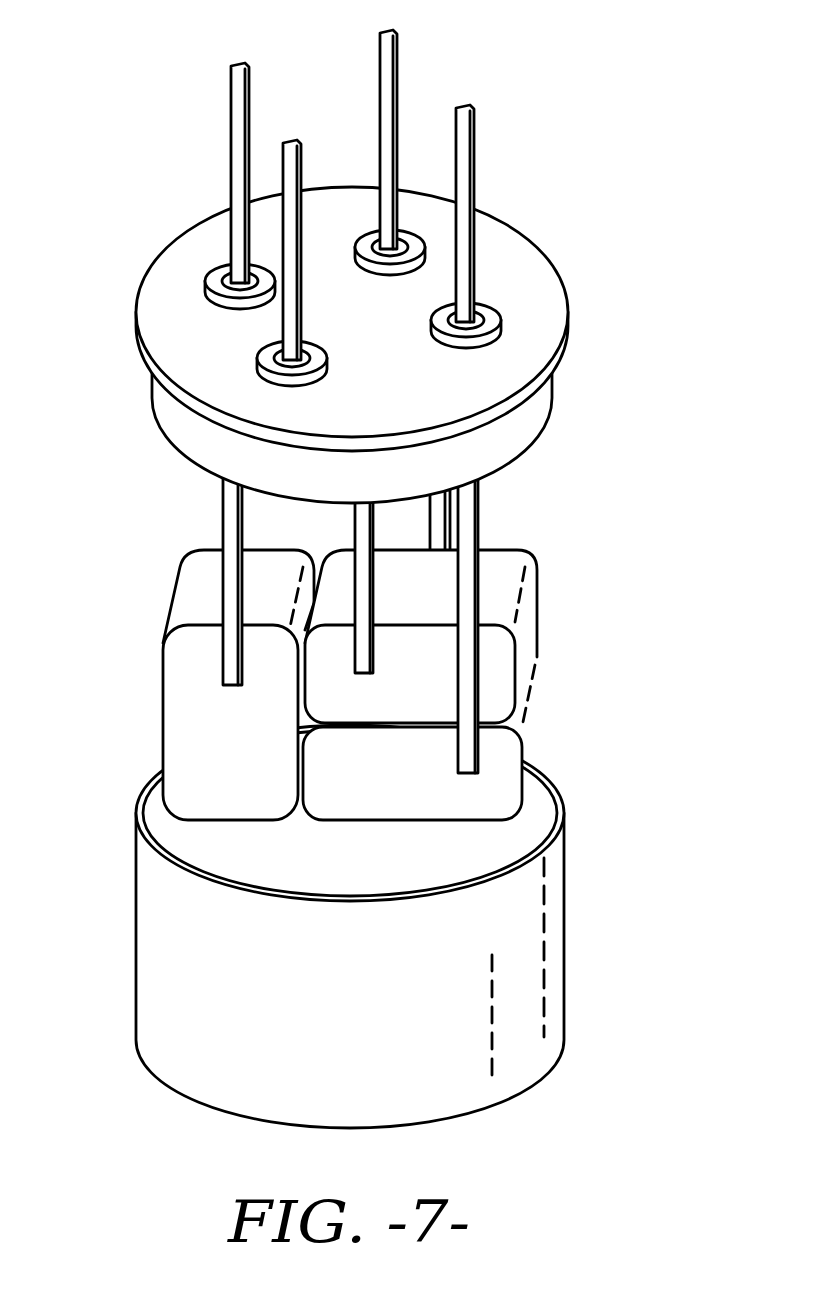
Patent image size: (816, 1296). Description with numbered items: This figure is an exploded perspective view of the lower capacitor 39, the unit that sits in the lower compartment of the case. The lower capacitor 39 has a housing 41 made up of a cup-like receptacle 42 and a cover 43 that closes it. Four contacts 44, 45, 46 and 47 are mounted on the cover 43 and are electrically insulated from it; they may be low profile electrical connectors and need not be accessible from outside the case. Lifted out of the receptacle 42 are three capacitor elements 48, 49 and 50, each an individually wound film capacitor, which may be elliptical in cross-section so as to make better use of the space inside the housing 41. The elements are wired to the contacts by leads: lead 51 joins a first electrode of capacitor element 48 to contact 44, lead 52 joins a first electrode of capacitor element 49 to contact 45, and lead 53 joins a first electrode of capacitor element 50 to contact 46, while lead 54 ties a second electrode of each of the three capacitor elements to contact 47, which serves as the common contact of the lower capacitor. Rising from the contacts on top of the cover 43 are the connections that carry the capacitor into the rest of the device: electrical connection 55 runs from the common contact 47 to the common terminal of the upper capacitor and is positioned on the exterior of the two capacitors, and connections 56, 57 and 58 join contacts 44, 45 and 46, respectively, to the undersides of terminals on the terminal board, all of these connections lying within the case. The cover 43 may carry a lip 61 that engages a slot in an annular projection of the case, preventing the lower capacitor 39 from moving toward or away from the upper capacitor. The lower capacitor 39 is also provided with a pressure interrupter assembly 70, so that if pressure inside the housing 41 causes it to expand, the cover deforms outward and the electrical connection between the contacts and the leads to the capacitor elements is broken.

The lower capacitor 39 is at (590, 817).
The housing 41 is at (110, 867).
The receptacle 42 is at (566, 947).
The cover 43 is at (500, 252).
The contact 44 is at (217, 278).
The contact 45 is at (265, 356).
The contact 46 is at (490, 318).
The common contact 47 is at (405, 235).
The capacitor element 48 is at (247, 749).
The capacitor element 49 is at (393, 689).
The capacitor element 50 is at (398, 784).
The lead 51 is at (223, 502).
The lead 52 is at (353, 513).
The lead 53 is at (478, 490).
The lead 54 is at (447, 520).
The electrical connection 55 is at (398, 71).
The connection 56 is at (231, 116).
The connection 57 is at (301, 168).
The connection 58 is at (474, 146).
The lip 61 is at (532, 398).
The pressure interrupter assembly 70 is at (182, 418).